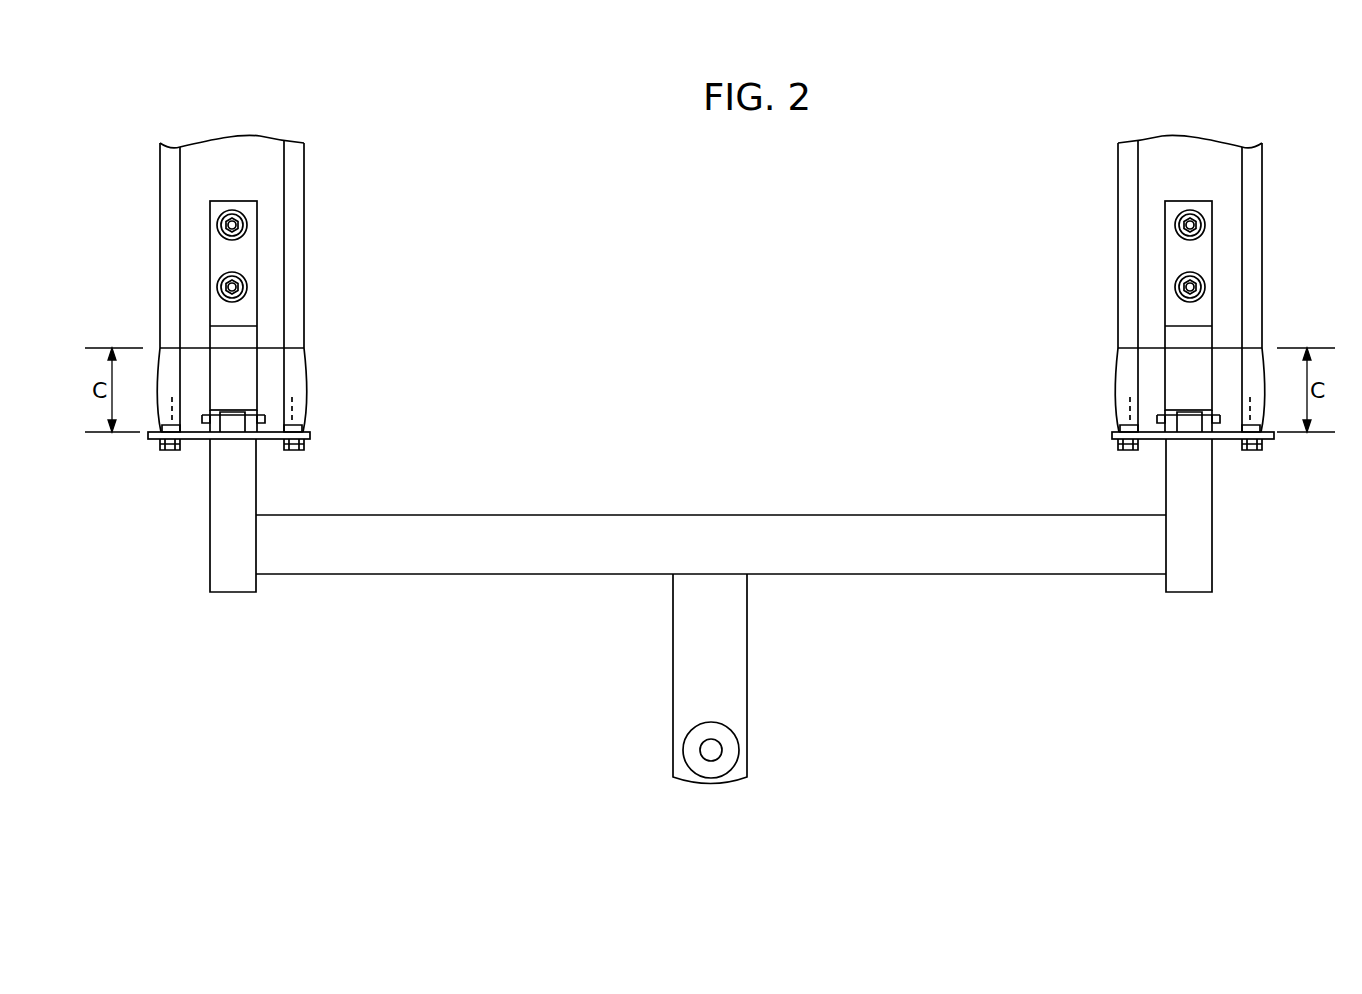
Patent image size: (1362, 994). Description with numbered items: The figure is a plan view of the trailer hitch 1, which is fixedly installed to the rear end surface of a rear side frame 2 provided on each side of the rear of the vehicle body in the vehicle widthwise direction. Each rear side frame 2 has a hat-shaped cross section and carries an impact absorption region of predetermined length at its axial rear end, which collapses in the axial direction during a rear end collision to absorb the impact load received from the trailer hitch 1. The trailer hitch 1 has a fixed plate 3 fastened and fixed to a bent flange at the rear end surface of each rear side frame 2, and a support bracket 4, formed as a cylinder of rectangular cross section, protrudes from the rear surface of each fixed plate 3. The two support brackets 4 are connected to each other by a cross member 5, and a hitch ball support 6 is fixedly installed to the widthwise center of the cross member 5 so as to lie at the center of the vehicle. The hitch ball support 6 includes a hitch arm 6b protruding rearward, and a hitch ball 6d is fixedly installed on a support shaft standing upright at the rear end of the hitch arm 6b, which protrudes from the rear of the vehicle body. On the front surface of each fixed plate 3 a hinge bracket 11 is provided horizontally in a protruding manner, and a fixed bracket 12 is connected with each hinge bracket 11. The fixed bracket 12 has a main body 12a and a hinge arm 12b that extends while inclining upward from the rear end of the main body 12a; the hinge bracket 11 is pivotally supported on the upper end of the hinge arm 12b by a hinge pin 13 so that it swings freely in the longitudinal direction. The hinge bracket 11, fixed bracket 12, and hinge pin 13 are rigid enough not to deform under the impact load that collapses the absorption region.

The trailer hitch 1 is at (465, 623).
The rear side frame 2 is at (160, 246).
The fixed plate 3 is at (198, 443).
The support bracket 4 is at (211, 554).
The cross member 5 is at (936, 558).
The hitch ball support 6 is at (720, 679).
The hitch arm 6b is at (672, 660).
The hitch ball 6d is at (747, 750).
The hinge bracket 11 is at (232, 418).
The fixed bracket 12 is at (410, 243).
The main body 12a is at (258, 262).
The hinge arm 12b is at (257, 335).
The hinge pin 13 is at (265, 420).